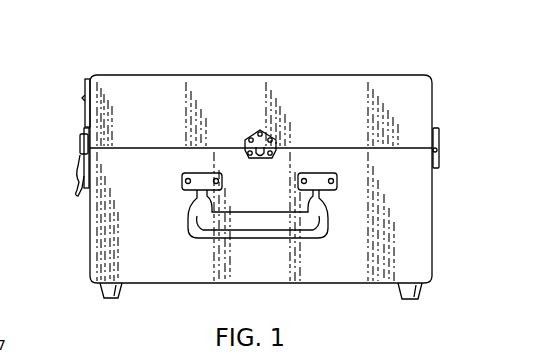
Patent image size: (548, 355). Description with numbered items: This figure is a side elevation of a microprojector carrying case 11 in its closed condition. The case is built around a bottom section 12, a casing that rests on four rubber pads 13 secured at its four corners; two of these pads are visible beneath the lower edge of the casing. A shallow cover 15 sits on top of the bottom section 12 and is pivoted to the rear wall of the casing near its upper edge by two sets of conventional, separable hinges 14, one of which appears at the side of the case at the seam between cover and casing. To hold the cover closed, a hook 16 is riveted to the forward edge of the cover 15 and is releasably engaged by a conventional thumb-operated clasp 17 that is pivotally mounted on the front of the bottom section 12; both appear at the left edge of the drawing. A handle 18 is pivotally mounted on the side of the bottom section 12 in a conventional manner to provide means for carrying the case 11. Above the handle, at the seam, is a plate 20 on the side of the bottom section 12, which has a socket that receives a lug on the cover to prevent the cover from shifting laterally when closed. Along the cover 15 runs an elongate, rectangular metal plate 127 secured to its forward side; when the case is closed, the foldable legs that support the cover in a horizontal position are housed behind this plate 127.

The microprojector carrying case 11 is at (90, 63).
The bottom section 12 is at (433, 227).
The rubber pads 13 is at (100, 290).
The hinges 14 is at (436, 150).
The cover 15 is at (322, 75).
The hook 16 is at (82, 138).
The clasp 17 is at (84, 160).
The handle 18 is at (192, 226).
The plate 20 is at (259, 156).
The metal plate 127 is at (86, 82).